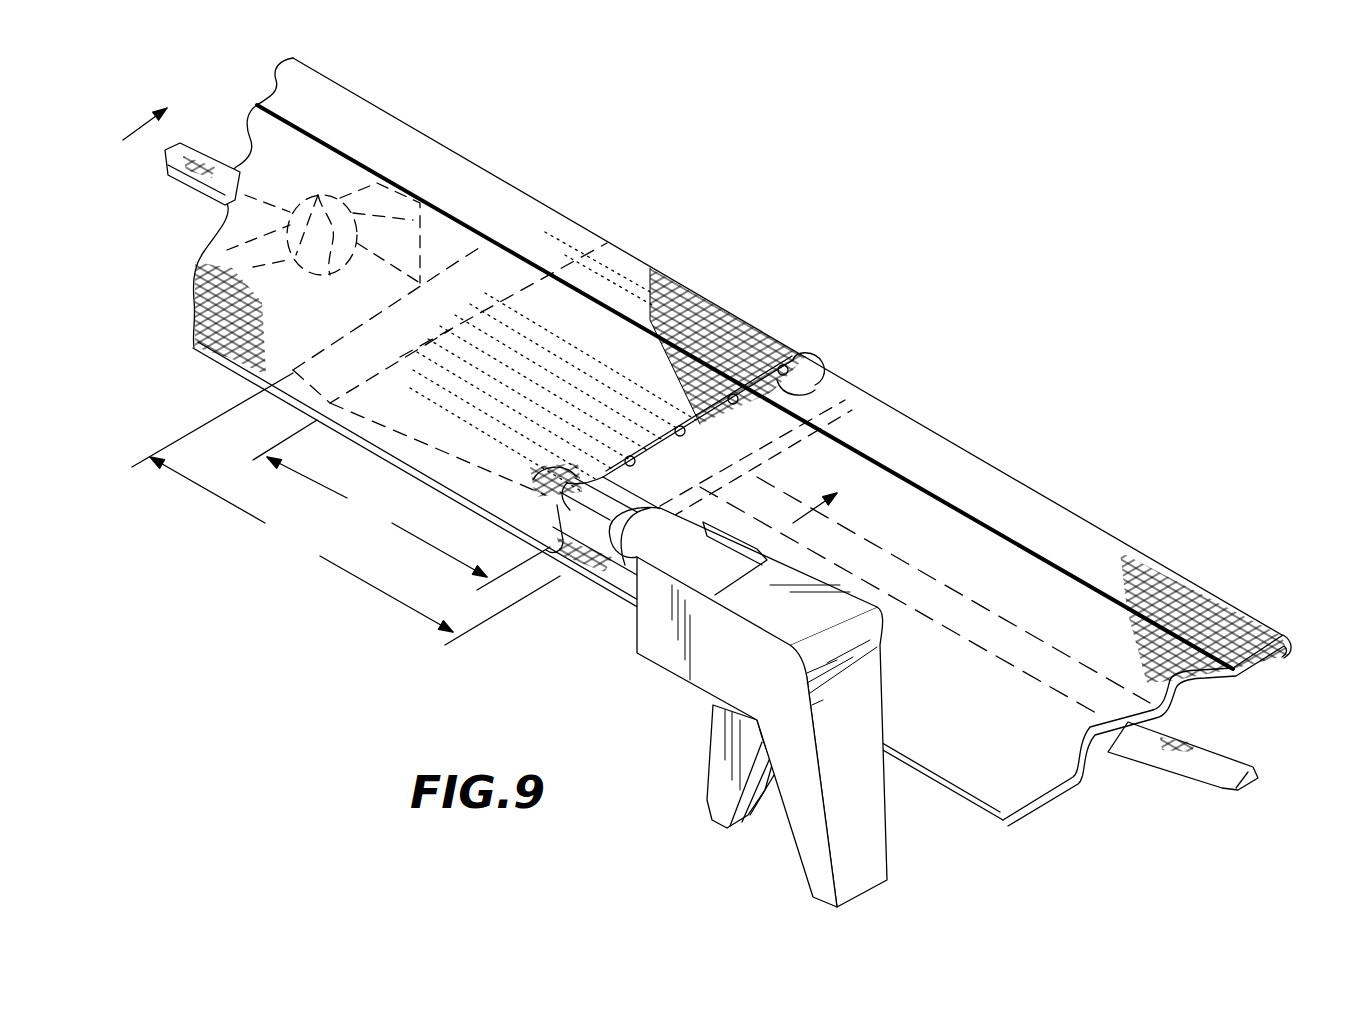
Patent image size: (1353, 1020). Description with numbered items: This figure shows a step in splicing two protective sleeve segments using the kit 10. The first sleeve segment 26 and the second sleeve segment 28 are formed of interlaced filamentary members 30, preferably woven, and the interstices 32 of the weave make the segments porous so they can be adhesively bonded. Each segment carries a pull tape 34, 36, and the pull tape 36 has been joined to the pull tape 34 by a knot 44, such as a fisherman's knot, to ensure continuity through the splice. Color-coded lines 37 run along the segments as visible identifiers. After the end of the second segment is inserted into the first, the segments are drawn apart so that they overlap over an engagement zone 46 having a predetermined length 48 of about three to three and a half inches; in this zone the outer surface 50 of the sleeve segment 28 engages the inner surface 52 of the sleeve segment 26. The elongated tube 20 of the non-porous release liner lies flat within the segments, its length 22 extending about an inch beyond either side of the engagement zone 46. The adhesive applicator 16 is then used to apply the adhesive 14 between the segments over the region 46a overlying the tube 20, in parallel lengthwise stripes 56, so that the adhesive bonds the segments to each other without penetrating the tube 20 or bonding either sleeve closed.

The kit 10 is at (493, 302).
The adhesive 14 is at (357, 325).
The adhesive applicator 16 is at (668, 658).
The elongated tube 20 is at (530, 262).
The length 22 is at (346, 509).
The sleeve segment 26 is at (400, 137).
The sleeve segment 28 is at (1093, 540).
The filamentary members 30 is at (1133, 552).
The interstices 32 is at (1223, 610).
The pull tape 34 is at (208, 185).
The pull tape 36 is at (1220, 767).
The color-coded lines 37 is at (470, 220).
The knot 44 is at (318, 195).
The engagement zone 46 is at (695, 307).
The region 46a is at (648, 295).
The predetermined length 48 is at (401, 505).
The outer surface 50 is at (947, 457).
The inner surface 52 is at (773, 405).
The stripes 56 is at (613, 262).